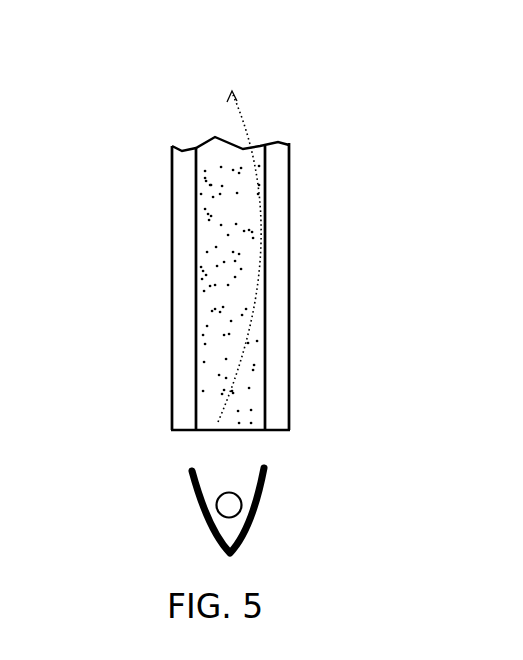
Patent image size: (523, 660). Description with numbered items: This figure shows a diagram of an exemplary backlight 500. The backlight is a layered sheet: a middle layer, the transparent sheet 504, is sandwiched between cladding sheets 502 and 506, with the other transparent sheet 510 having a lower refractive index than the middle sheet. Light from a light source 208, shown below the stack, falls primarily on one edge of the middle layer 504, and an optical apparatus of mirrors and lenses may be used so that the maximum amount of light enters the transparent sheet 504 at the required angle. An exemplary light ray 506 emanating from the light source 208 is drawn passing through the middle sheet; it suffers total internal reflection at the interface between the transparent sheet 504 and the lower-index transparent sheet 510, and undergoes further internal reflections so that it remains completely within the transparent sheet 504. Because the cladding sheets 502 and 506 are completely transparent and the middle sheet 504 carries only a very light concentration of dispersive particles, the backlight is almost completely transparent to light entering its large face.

The detection assembly 500 is at (283, 24).
The cladding sheet 502 is at (172, 146).
The transparent sheet 504 is at (223, 253).
The light ray 506 is at (242, 324).
The transparent sheet 510 is at (289, 143).
The light source 208 is at (259, 510).